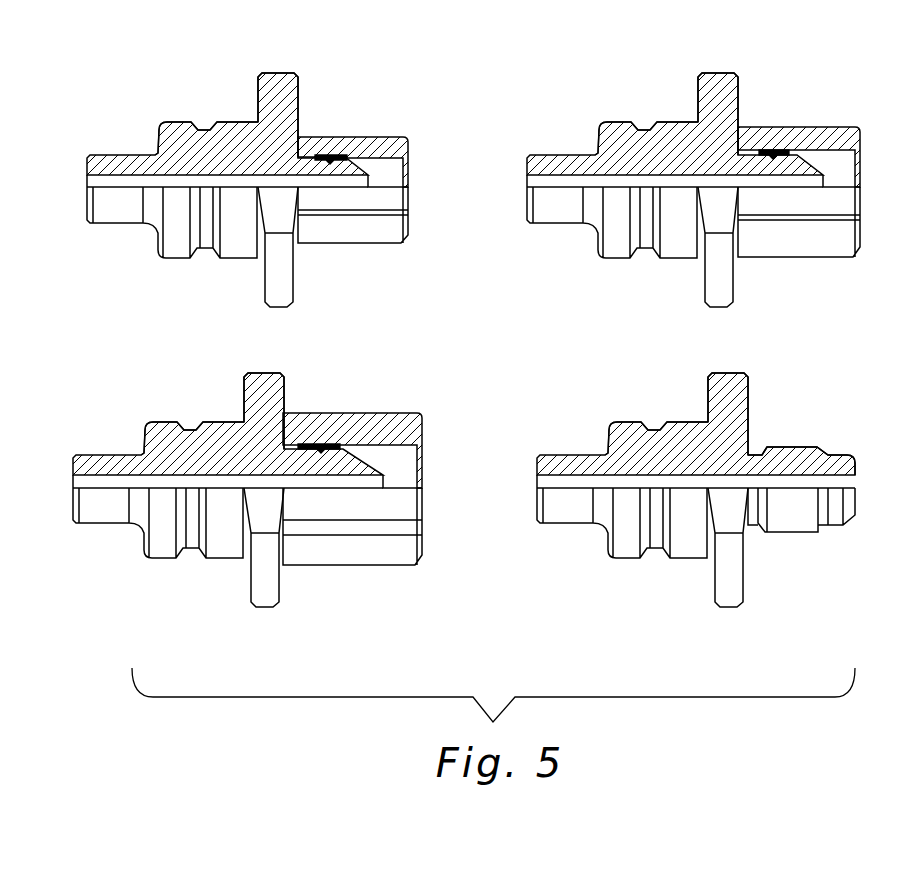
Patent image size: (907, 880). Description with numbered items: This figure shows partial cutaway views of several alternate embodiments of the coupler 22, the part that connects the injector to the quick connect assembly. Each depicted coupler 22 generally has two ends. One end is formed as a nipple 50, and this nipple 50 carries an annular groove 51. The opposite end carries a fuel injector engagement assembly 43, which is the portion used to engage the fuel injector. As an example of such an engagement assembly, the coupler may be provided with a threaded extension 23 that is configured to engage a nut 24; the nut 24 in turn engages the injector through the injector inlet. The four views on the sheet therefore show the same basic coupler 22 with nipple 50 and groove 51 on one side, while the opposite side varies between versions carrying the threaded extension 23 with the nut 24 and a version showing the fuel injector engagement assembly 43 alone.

The coupler 22 is at (492, 320).
The threaded extension 23 is at (572, 273).
The nut 24 is at (571, 312).
The fuel injector engagement assembly 43 is at (801, 455).
The nipple 50 is at (390, 549).
The annular groove 51 is at (424, 263).